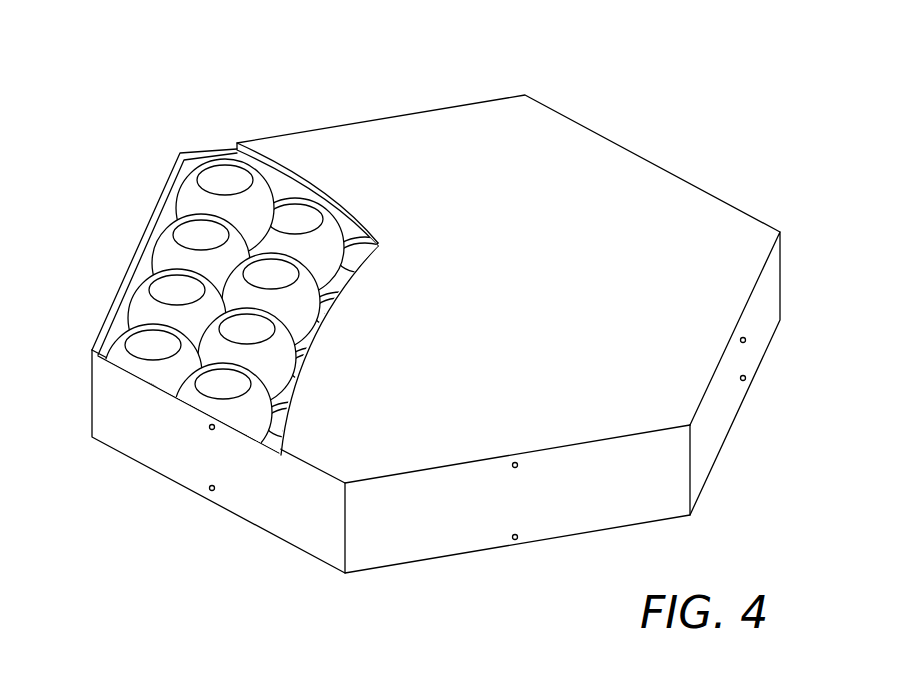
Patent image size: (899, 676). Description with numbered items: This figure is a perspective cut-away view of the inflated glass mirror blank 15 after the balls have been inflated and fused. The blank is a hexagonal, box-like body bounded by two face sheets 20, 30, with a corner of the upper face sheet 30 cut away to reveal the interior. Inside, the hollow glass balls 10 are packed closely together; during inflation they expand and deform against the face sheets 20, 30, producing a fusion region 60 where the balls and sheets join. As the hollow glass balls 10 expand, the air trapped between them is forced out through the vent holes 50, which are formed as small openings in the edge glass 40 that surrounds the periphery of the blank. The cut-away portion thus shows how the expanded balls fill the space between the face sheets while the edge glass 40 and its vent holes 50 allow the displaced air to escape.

The inflated glass mirror blank 15 is at (112, 101).
The hollow glass balls 10 is at (195, 195).
The face sheet 20 is at (720, 455).
The face sheet 30 is at (617, 172).
The edge glass 40 is at (763, 288).
The vent holes 50 is at (748, 340).
The fusion region 60 is at (220, 177).